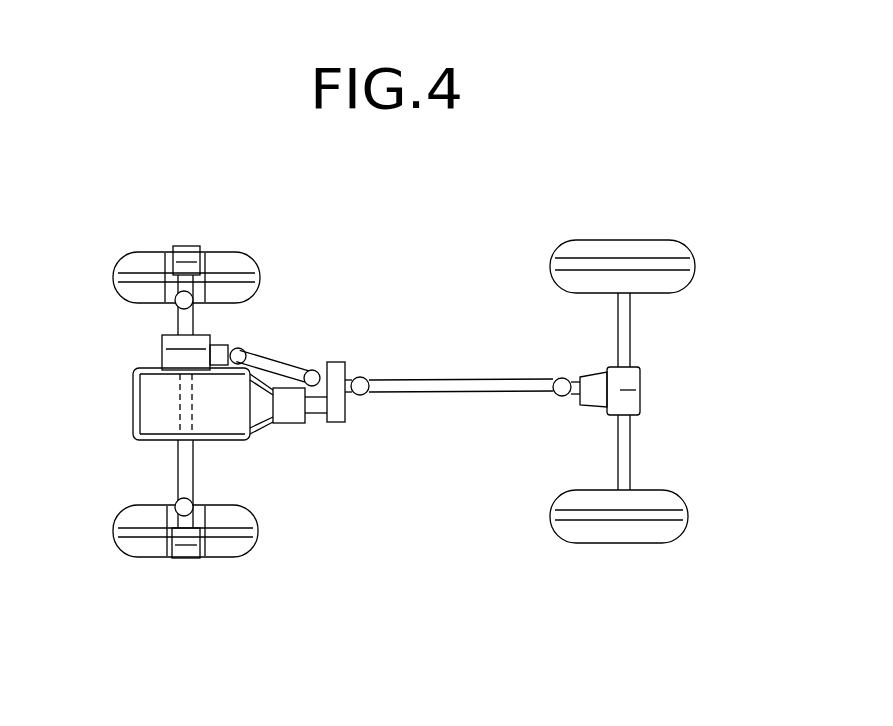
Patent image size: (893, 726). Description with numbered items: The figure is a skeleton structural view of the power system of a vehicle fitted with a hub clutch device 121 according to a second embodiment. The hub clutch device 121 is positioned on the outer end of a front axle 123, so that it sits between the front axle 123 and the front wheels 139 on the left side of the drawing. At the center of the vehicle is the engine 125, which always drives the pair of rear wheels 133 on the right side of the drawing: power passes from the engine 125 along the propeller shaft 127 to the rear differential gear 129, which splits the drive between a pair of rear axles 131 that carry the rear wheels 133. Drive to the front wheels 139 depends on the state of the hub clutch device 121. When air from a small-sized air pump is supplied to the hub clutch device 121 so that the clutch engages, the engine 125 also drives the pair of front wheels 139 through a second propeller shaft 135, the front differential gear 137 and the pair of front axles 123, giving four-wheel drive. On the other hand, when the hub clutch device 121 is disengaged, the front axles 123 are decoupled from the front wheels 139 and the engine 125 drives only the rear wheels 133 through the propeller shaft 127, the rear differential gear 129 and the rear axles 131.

The hub clutch device 121 is at (190, 246).
The front axle 123 is at (172, 289).
The engine 125 is at (133, 415).
The propeller shaft 127 is at (468, 382).
The rear differential gear 129 is at (641, 379).
The rear axle 131 is at (622, 336).
The rear wheel 133 is at (680, 253).
The propeller shaft 135 is at (280, 372).
The front differential gear 137 is at (162, 352).
The front wheel 139 is at (140, 262).